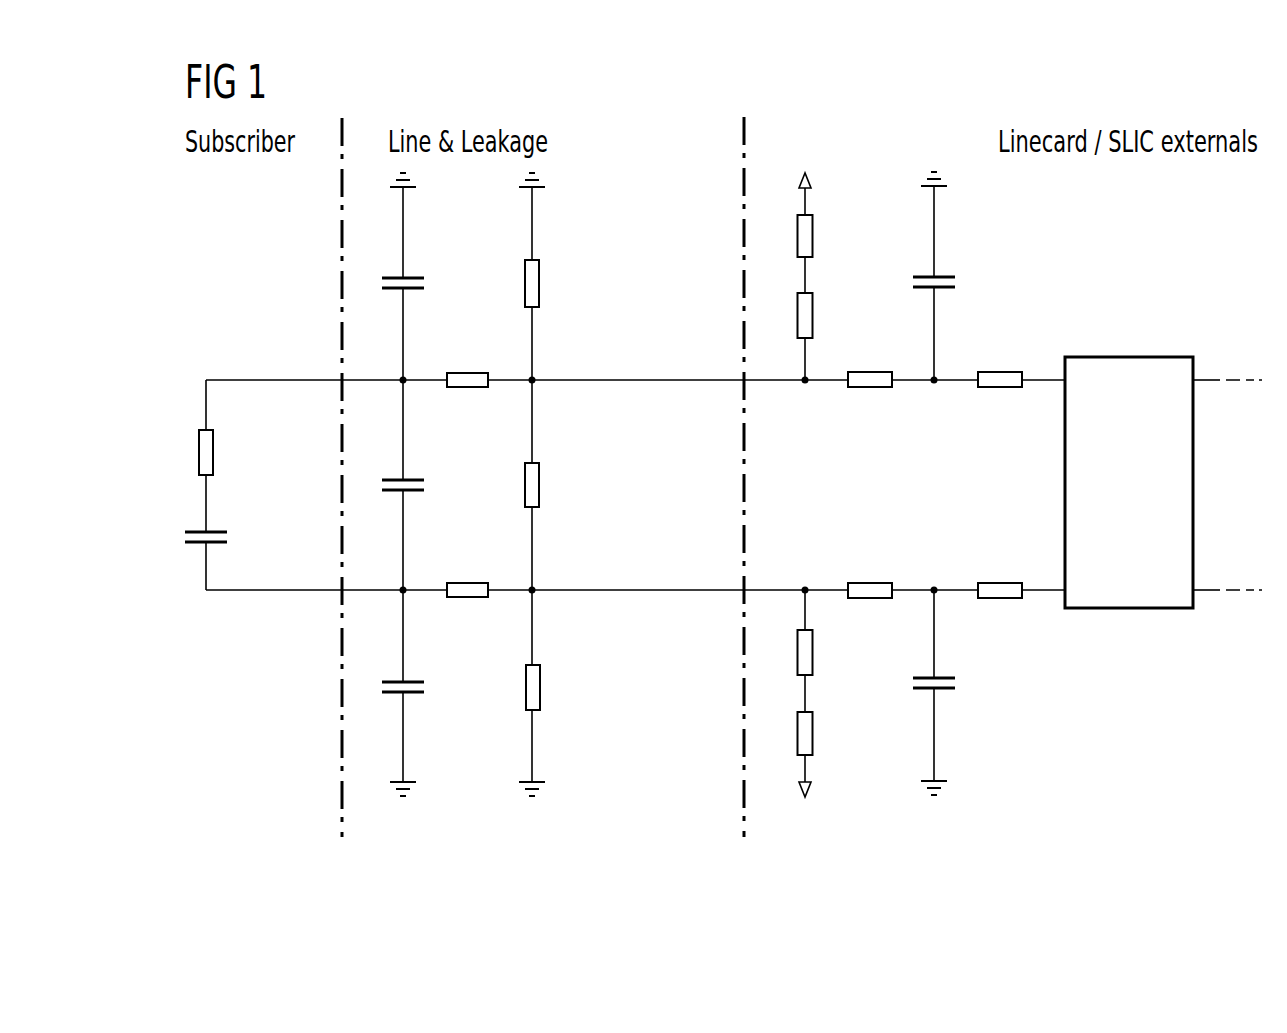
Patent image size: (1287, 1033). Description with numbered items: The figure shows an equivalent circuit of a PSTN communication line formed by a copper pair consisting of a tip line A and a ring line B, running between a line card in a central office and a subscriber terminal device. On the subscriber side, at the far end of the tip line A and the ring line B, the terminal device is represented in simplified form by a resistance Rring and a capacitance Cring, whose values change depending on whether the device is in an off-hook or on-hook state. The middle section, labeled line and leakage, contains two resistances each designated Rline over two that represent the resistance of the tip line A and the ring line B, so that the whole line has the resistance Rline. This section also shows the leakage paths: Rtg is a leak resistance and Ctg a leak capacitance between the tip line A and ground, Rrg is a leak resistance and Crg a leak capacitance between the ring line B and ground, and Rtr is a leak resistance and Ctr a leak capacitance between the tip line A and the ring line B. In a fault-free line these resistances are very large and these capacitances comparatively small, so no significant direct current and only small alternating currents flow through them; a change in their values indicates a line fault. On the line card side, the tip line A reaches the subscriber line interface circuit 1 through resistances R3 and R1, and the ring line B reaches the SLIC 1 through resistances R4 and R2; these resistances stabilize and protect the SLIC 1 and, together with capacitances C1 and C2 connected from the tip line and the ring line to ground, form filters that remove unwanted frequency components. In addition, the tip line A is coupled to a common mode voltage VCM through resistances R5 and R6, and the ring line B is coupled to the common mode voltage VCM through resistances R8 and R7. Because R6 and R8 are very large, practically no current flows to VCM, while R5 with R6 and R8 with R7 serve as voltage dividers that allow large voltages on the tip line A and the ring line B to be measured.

The subscriber line interface circuit (SLIC) 1 is at (1128, 356).
The resistance R1 is at (1000, 388).
The resistance R2 is at (1000, 582).
The resistance R3 is at (871, 388).
The resistance R4 is at (870, 582).
The resistance R5 is at (813, 236).
The resistance R6 is at (813, 315).
The resistance R7 is at (813, 733).
The resistance R8 is at (813, 652).
The capacitance C1 is at (957, 285).
The capacitance C2 is at (957, 686).
The leak capacitance Ctg is at (426, 287).
The leak capacitance Ctr is at (426, 489).
The leak capacitance Crg is at (426, 690).
The leak resistance Rtg is at (539, 283).
The leak resistance Rtr is at (539, 488).
The leak resistance Rrg is at (540, 689).
The resistance Rring is at (213, 452).
The capacitance Cring is at (229, 541).
The tip line A is at (641, 379).
The ring line B is at (643, 589).
The common mode voltage VCM is at (806, 488).